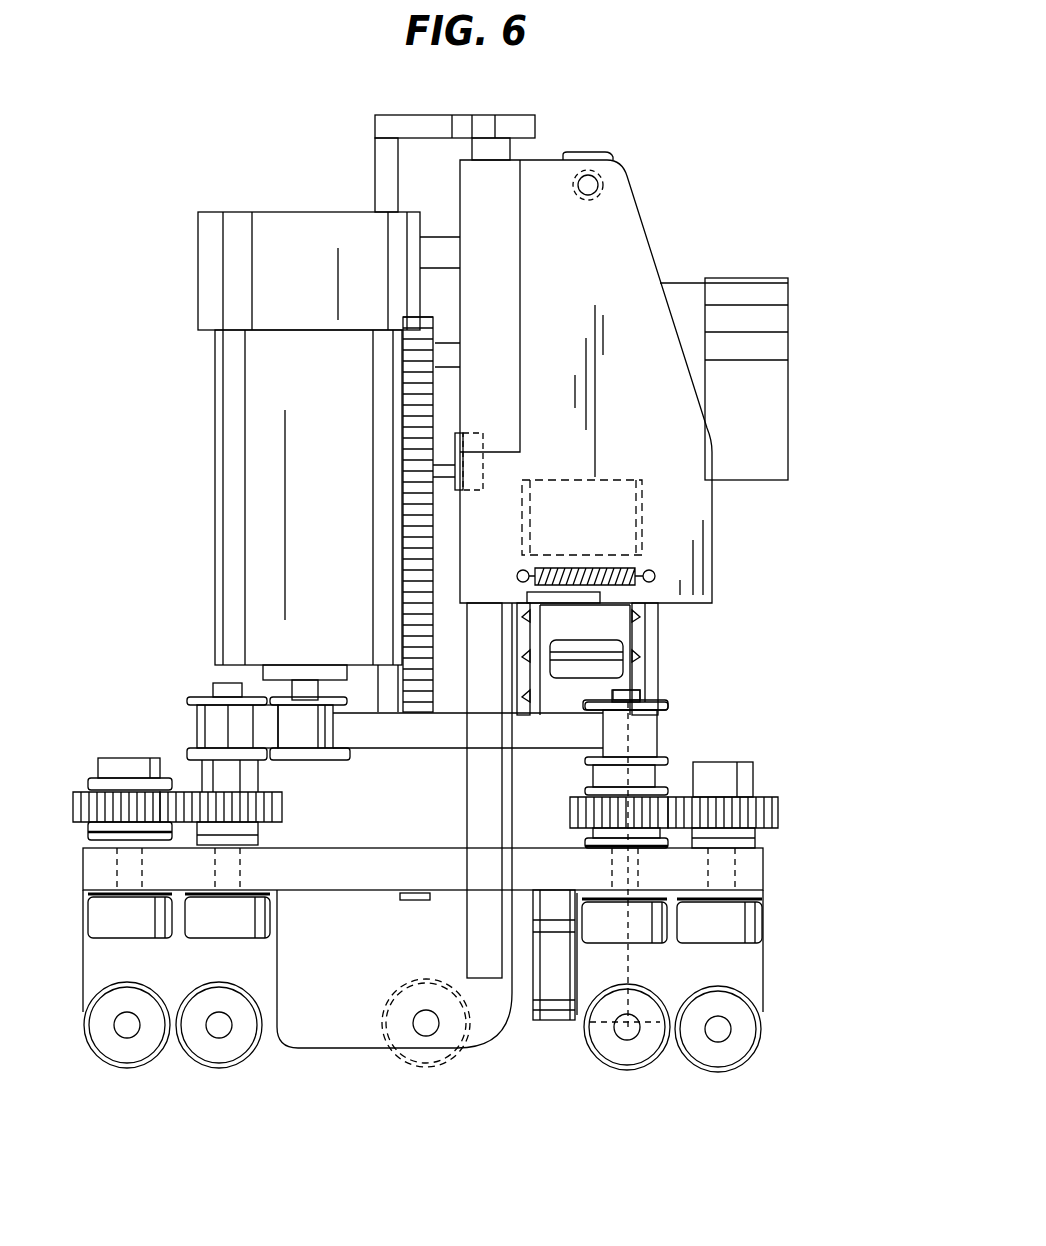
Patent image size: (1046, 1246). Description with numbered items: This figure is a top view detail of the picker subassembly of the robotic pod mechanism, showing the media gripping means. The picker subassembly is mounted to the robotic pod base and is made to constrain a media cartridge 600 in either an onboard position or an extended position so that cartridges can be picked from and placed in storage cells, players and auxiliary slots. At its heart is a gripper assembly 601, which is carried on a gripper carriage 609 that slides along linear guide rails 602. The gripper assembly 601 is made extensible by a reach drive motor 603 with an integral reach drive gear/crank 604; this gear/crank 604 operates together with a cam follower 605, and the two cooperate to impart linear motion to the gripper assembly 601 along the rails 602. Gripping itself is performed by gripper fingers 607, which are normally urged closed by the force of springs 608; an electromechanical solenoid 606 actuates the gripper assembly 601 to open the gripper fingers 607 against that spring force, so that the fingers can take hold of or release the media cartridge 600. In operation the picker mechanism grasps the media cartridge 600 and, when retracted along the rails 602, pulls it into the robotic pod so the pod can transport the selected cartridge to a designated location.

The media cartridge 600 is at (547, 1024).
The gripper assembly 601 is at (782, 558).
The linear guide rails 602 is at (493, 980).
The reach drive motor 603 is at (790, 290).
The reach drive gear/crank 604 is at (410, 472).
The cam follower 605 is at (457, 492).
The electromechanical solenoid 606 is at (603, 522).
The gripper fingers 607 is at (660, 643).
The springs 608 is at (655, 570).
The gripper carriage 609 is at (630, 200).